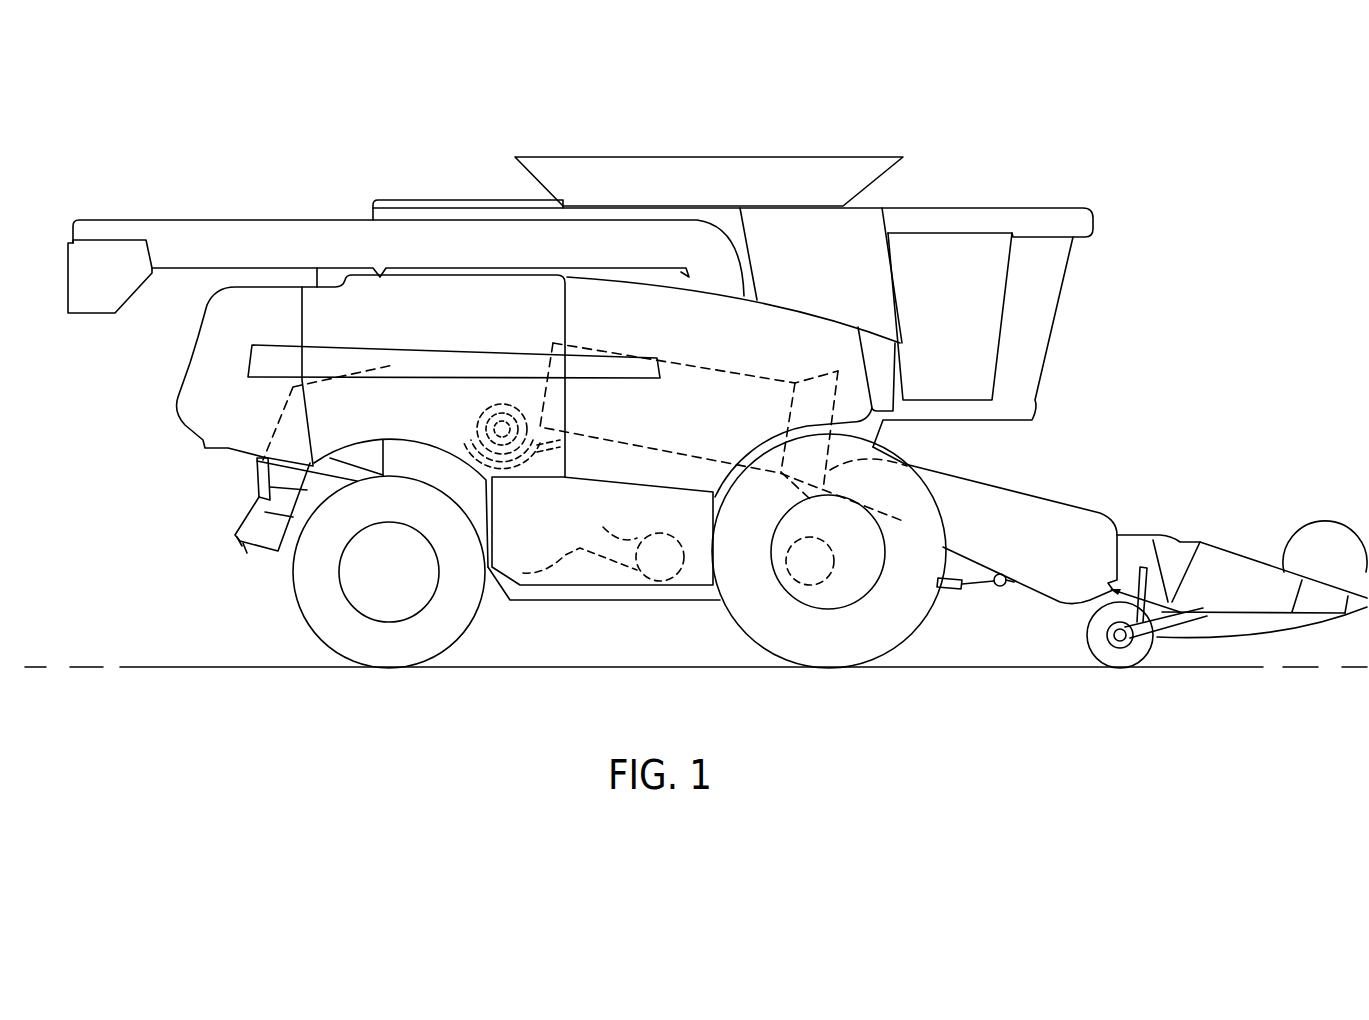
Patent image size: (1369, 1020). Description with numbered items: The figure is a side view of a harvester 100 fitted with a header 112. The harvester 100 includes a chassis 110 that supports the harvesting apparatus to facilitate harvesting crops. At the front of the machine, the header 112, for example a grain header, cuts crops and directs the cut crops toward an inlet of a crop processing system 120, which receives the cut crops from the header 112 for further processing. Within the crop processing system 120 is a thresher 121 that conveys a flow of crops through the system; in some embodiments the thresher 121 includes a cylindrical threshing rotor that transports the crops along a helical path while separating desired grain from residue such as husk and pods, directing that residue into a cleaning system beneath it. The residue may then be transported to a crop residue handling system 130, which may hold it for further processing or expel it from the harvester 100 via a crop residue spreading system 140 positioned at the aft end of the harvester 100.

The harvester 100 is at (717, 409).
The chassis 110 is at (539, 609).
The header 112 is at (1217, 481).
The crop processing system 120 is at (699, 339).
The thresher 121 is at (712, 358).
The crop residue handling system 130 is at (438, 341).
The crop residue spreading system 140 is at (239, 514).